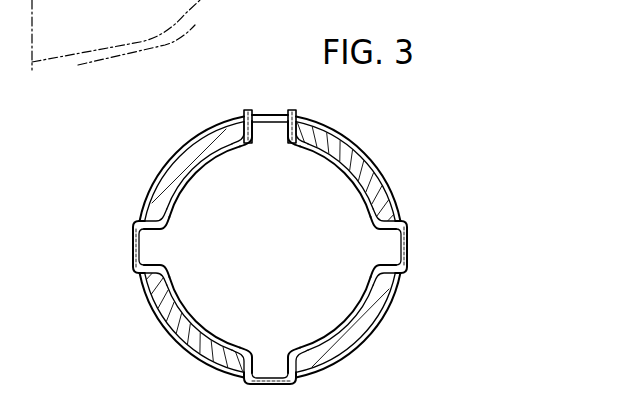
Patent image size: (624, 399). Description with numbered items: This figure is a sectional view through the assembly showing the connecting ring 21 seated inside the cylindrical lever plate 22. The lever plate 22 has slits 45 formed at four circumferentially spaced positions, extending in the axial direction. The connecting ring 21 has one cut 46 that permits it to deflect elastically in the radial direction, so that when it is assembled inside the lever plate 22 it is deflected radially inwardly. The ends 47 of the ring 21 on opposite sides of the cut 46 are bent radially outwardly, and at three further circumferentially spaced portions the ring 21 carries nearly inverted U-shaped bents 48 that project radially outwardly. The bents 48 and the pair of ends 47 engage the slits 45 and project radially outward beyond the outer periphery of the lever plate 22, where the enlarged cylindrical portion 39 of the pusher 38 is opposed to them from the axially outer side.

The connecting ring 21 is at (193, 191).
The lever plate 22 is at (190, 146).
The pusher 38 is at (288, 229).
The enlarged cylindrical portion 39 is at (283, 229).
The slits 45 is at (301, 123).
The cut 46 is at (268, 142).
The ends 47 is at (290, 110).
The bents 48 is at (135, 224).